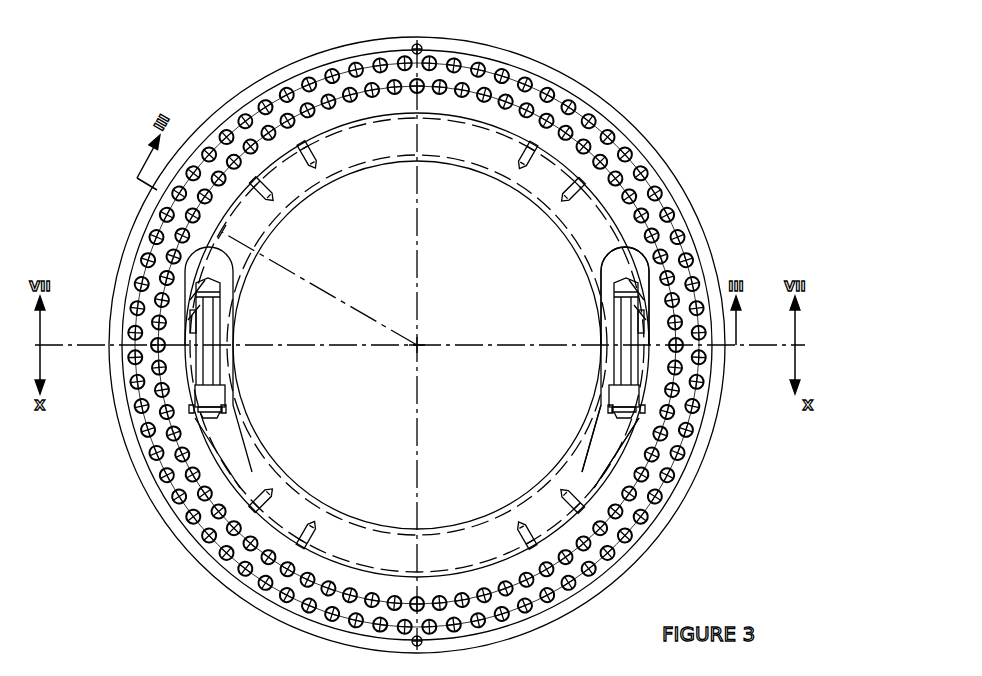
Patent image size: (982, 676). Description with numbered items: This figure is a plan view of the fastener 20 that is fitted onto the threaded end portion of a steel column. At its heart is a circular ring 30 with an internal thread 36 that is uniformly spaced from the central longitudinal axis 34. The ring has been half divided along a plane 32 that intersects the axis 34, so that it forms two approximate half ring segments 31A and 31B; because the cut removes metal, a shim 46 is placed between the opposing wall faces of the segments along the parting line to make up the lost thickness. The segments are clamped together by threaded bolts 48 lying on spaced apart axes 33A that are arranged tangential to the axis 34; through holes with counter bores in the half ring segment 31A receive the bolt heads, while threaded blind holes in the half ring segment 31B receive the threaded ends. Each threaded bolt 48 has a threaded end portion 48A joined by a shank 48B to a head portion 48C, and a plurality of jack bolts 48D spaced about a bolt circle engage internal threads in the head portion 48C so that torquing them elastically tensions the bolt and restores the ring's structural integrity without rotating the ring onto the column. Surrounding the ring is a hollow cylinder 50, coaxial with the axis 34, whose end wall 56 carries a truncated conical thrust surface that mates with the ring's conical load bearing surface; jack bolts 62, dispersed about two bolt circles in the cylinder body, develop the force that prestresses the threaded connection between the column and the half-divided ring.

The fastener 20 is at (620, 85).
The circular ring 30 is at (467, 110).
The half ring segment 31A is at (623, 232).
The half ring segment 31B is at (622, 455).
The plane 32 is at (347, 345).
The spaced apart axes 33A is at (212, 320).
The central longitudinal axis 34 is at (420, 352).
The internal thread 36 is at (355, 170).
The shim 46 is at (245, 345).
The threaded bolt 48 is at (190, 400).
The threaded end portion 48A is at (202, 313).
The shank 48B is at (197, 358).
The head portion 48C is at (205, 420).
The jack bolt 48D is at (190, 398).
The hollow cylinder 50 is at (681, 535).
The end wall 56 is at (507, 632).
The jack bolts 62 is at (655, 514).